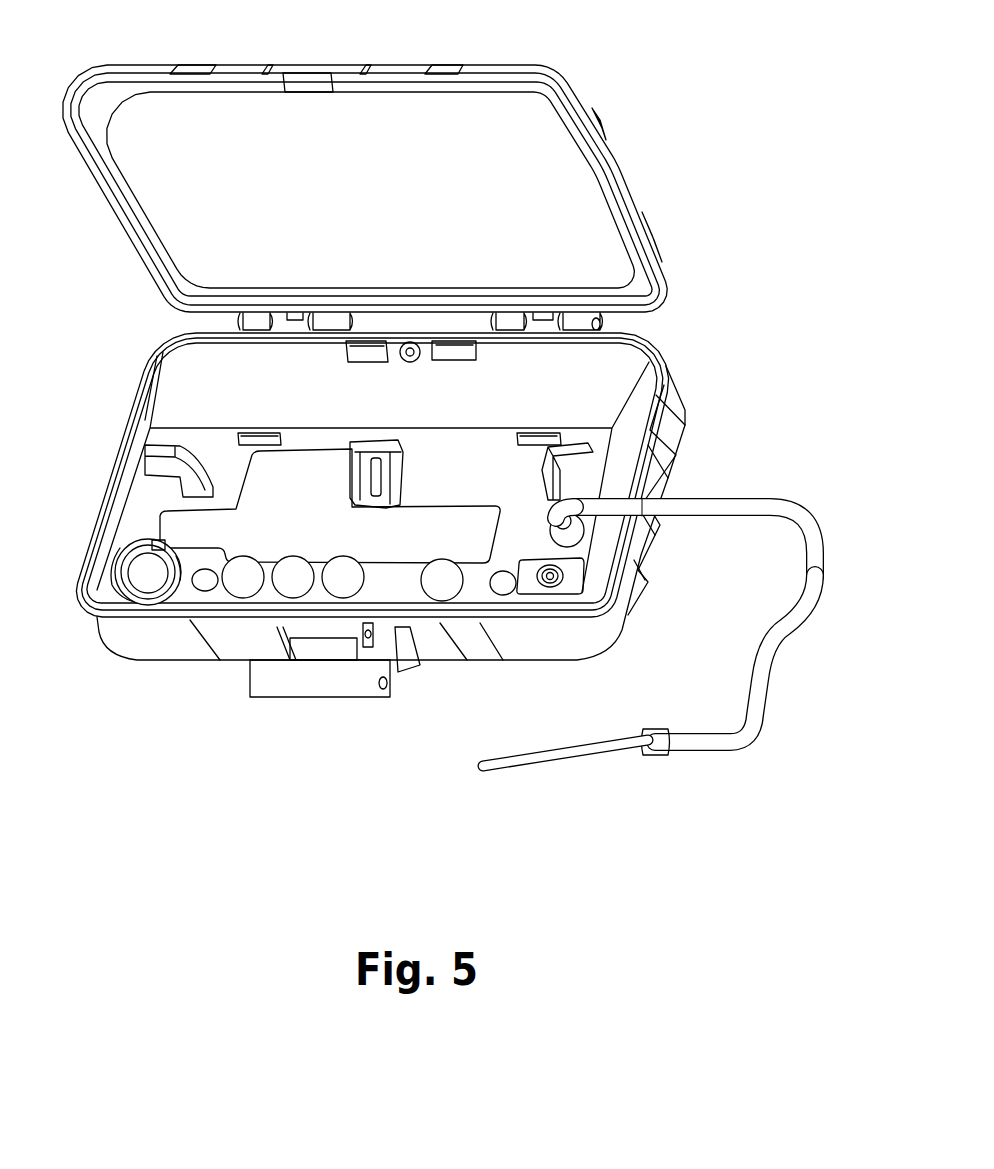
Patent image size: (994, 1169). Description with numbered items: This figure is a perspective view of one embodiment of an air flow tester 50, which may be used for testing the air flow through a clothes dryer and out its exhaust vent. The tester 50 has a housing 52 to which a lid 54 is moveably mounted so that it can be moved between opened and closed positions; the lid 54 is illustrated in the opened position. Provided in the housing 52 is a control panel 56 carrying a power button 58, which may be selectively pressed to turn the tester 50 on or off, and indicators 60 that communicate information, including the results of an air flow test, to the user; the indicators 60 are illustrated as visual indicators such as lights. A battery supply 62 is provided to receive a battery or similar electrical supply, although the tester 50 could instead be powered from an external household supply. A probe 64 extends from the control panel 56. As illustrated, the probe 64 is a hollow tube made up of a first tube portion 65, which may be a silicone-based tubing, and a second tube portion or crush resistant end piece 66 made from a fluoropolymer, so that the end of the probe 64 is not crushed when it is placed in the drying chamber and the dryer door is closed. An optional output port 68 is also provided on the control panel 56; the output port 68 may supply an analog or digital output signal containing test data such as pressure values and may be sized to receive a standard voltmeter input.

The air flow tester 50 is at (794, 157).
The housing 52 is at (133, 647).
The lid 54 is at (132, 76).
The control panel 56 is at (612, 455).
The power button 58 is at (145, 568).
The indicators 60 is at (343, 586).
The battery supply 62 is at (193, 372).
The probe 64 is at (752, 749).
The first tube portion 65 is at (803, 512).
The crush resistant end piece 66 is at (588, 756).
The output port 68 is at (551, 583).